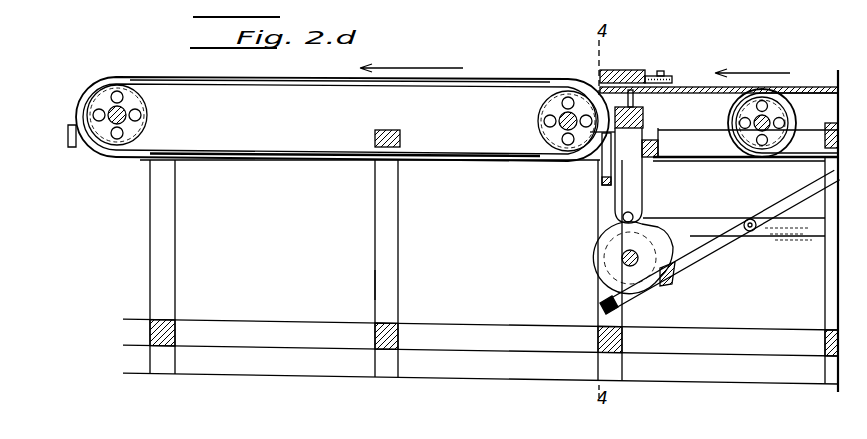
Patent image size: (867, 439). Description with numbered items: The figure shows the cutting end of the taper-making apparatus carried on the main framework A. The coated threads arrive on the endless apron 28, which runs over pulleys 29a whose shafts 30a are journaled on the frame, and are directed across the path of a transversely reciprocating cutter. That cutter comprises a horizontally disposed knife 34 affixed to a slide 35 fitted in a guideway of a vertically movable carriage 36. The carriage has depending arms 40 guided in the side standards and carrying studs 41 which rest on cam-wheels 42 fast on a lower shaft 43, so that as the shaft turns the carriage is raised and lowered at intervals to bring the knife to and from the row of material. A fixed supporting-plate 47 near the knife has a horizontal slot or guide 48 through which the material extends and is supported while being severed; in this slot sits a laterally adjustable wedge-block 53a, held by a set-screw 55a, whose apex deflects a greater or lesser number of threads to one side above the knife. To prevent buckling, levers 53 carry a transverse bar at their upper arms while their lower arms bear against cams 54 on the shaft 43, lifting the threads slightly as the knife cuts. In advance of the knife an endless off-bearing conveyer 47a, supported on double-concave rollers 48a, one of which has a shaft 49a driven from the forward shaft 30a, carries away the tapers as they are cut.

The endless off-bearing conveyer 47a is at (323, 86).
The double-concave rollers 48a is at (150, 108).
The roller shaft 49a is at (115, 118).
The fixed supporting-plate 47 is at (664, 76).
The horizontal slot or guide 48 is at (648, 73).
The set-screw 55a is at (663, 77).
The laterally-adjustable wedge-block 53a is at (686, 88).
The endless apron 28 is at (788, 160).
The pulley shafts 30a is at (766, 121).
The apron pulleys 29a is at (791, 124).
The knife 34 is at (638, 103).
The slide 35 is at (645, 117).
The vertically-movable carriage 36 is at (594, 160).
The depending arms 40 is at (645, 177).
The studs 41 is at (642, 210).
The cam-wheels 42 is at (598, 243).
The lower shaft 43 is at (621, 258).
The cams 54 is at (671, 283).
The levers 53 is at (775, 207).
The framework A is at (395, 291).